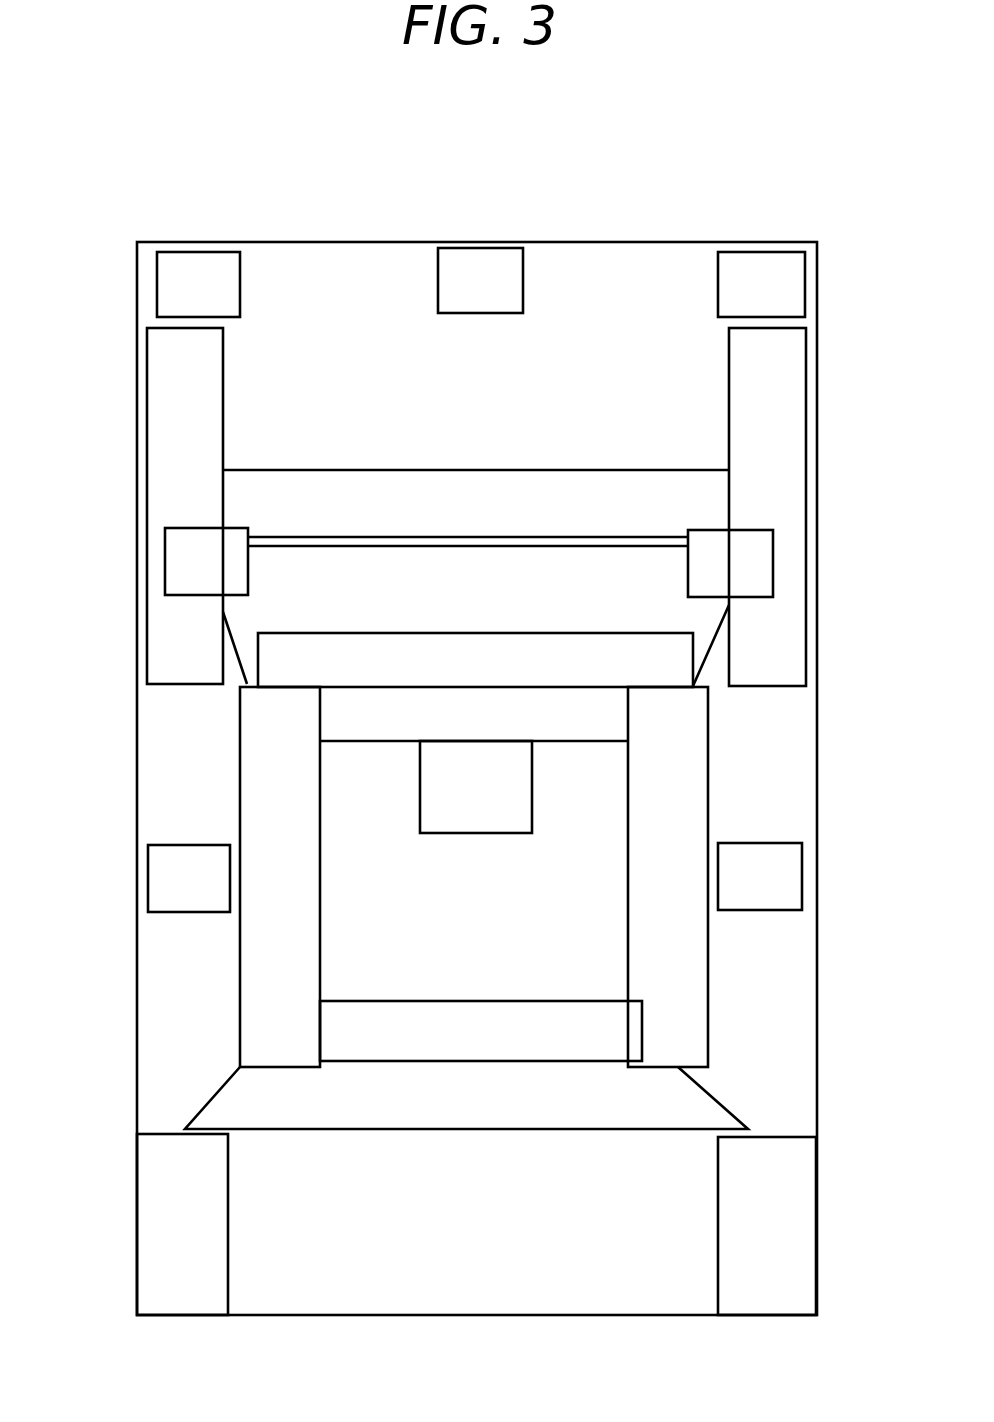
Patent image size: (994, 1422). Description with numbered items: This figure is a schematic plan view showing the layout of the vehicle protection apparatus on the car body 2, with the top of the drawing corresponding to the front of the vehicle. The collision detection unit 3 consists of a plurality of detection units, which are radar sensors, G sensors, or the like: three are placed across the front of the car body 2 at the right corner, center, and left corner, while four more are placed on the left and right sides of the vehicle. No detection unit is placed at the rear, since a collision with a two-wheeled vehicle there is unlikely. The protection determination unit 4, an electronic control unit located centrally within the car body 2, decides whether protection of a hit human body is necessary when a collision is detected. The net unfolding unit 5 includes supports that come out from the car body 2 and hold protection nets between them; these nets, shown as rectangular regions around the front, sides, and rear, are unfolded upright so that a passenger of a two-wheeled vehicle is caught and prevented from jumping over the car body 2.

The car body 2 is at (790, 978).
The collision detection unit 3 is at (463, 258).
The protection determination unit 4 is at (476, 835).
The net unfolding unit 5 is at (165, 412).